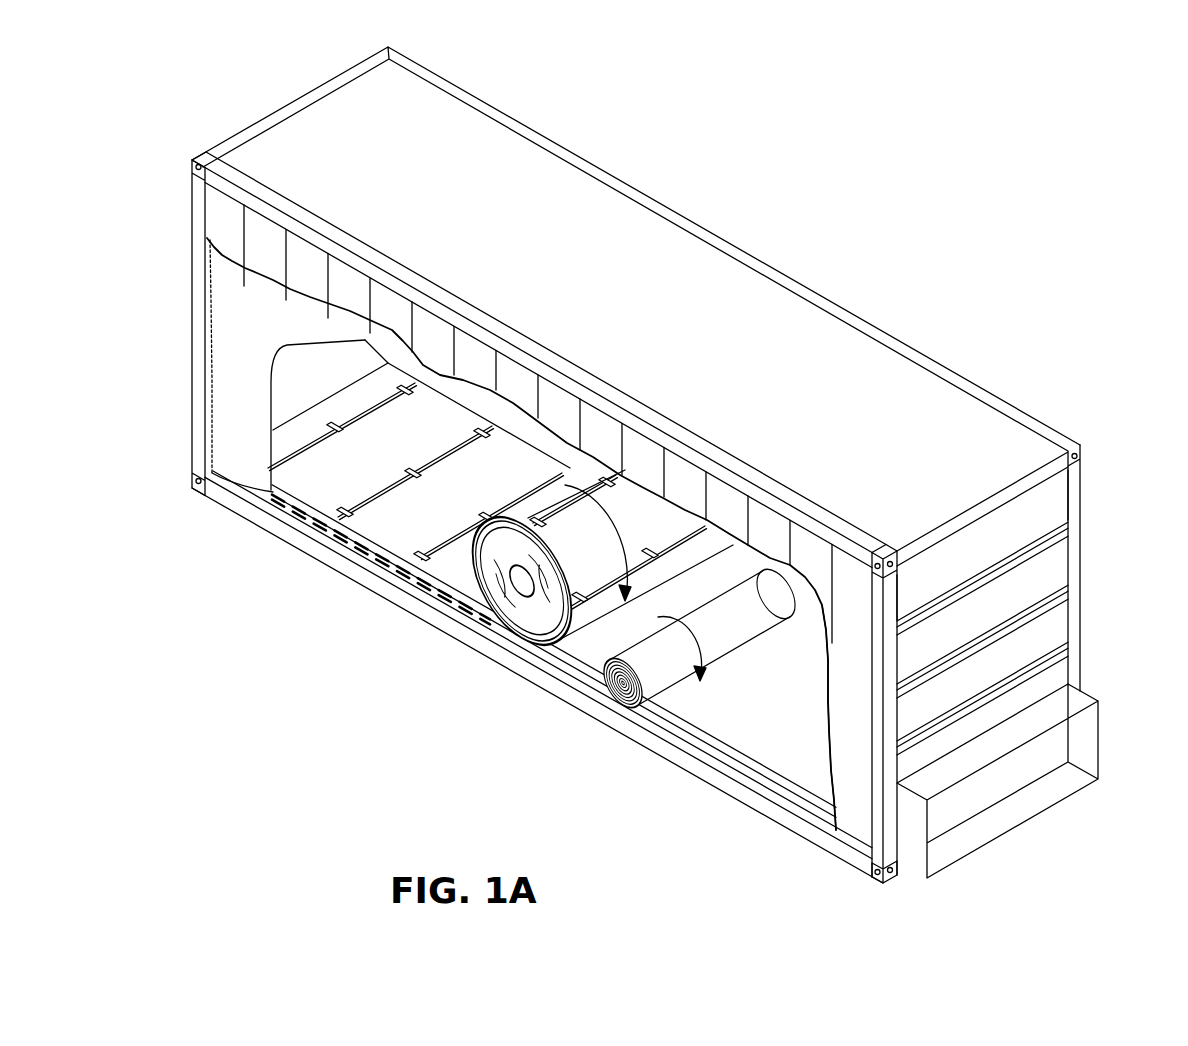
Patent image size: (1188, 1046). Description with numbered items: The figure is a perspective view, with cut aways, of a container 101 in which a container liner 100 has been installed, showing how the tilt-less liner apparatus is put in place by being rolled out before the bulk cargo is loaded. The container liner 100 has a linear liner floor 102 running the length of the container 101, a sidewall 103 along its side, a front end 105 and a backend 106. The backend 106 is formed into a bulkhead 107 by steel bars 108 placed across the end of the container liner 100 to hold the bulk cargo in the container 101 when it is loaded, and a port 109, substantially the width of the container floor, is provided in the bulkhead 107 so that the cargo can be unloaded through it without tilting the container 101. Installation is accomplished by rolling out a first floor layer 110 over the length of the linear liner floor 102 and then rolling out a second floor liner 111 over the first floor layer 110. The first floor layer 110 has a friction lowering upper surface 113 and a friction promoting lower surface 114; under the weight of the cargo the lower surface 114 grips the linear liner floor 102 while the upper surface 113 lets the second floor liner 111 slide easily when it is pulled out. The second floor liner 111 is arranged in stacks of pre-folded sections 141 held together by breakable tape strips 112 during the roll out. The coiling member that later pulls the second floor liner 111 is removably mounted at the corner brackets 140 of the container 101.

The container liner 100 is at (223, 335).
The container 101 is at (223, 220).
The linear liner floor 102 is at (742, 757).
The sidewall 103 is at (223, 390).
The front end 105 is at (262, 122).
The backend 106 is at (1033, 465).
The bulkhead 107 is at (1050, 507).
The steel bars 108 is at (1040, 670).
The port 109 is at (1057, 737).
The first floor layer 110 is at (623, 687).
The second floor liner 111 is at (393, 536).
The tape strips 112 is at (470, 612).
The friction lowering upper surface 113 is at (592, 678).
The friction promoting lower surface 114 is at (708, 638).
The corner brackets 140 is at (872, 870).
The pre-folded sections 141 is at (304, 526).